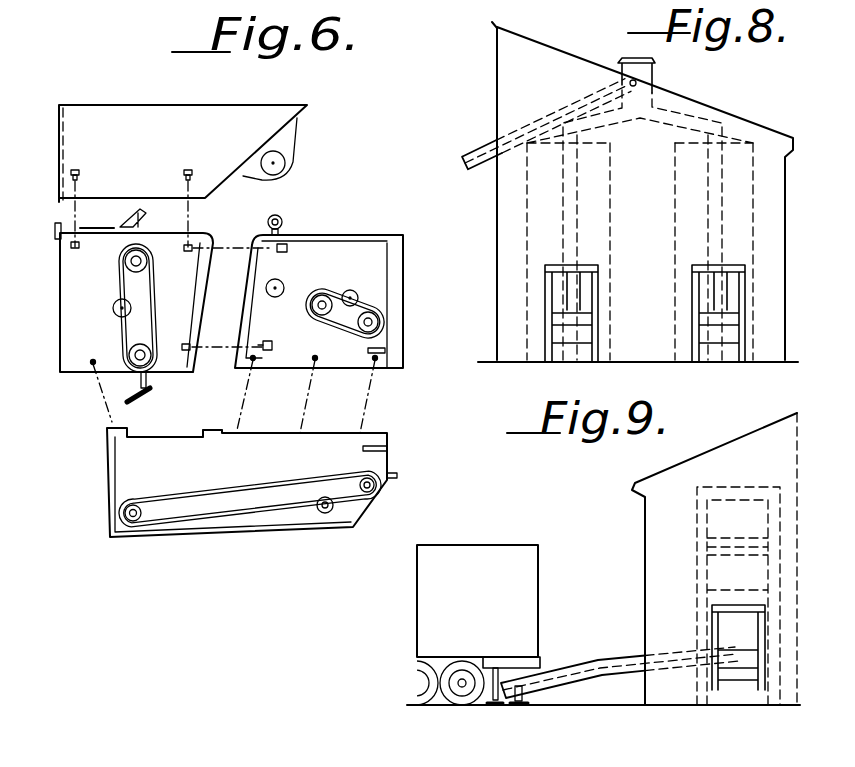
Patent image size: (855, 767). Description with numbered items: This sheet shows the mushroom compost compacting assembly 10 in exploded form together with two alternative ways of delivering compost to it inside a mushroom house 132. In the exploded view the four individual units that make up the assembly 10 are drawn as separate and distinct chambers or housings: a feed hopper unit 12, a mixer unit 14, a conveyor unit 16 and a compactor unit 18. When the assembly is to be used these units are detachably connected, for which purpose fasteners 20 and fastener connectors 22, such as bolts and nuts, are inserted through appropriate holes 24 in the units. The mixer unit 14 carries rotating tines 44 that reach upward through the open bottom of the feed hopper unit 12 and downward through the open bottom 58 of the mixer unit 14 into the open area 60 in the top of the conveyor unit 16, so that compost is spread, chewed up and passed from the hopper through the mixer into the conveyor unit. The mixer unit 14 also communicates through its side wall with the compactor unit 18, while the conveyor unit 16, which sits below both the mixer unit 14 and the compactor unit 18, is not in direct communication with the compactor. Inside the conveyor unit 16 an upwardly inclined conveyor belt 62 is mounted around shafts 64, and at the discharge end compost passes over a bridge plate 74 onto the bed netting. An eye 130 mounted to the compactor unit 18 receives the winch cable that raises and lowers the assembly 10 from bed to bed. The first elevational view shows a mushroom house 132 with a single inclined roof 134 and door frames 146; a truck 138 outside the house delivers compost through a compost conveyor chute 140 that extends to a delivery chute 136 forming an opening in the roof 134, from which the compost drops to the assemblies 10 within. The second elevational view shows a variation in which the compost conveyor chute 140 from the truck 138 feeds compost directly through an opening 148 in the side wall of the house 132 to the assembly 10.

In FIG. 6, the mushroom compost compacting assembly 10 is at (349, 188).
In FIG. 8, the mushroom compost compacting assembly 10 is at (724, 354).
In FIG. 9, the mushroom compost compacting assembly 10 is at (736, 697).
In FIG. 6, the feed hopper unit 12 is at (300, 107).
In FIG. 6, the mixer unit 14 is at (80, 316).
In FIG. 6, the conveyor unit 16 is at (277, 513).
In FIG. 6, the compactor unit 18 is at (350, 252).
In FIG. 6, the fasteners 20 is at (185, 172).
In FIG. 6, the fastener connectors 22 is at (72, 250).
In FIG. 6, the holes 24 is at (108, 428).
In FIG. 6, the tines 44 is at (113, 217).
In FIG. 6, the open bottom of mixer unit 58 is at (167, 375).
In FIG. 6, the open area of conveyor unit top 60 is at (207, 433).
In FIG. 6, the conveyor belt 62 is at (227, 495).
In FIG. 6, the shafts 64 is at (134, 521).
In FIG. 6, the bridge plate 74 is at (398, 476).
In FIG. 6, the eye 130 is at (283, 219).
In FIG. 8, the mushroom house 132 is at (513, 252).
In FIG. 9, the mushroom house 132 is at (660, 533).
In FIG. 8, the roof 134 is at (777, 115).
In FIG. 8, the delivery chute 136 is at (660, 89).
In FIG. 9, the truck 138 is at (495, 553).
In FIG. 8, the compost conveyor chute 140 is at (480, 147).
In FIG. 9, the compost conveyor chute 140 is at (596, 662).
In FIG. 9, the door frames 146 is at (717, 692).
In FIG. 9, the opening in side wall 148 is at (644, 670).